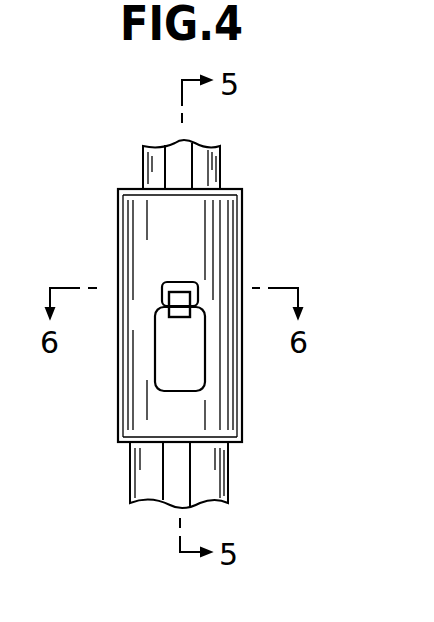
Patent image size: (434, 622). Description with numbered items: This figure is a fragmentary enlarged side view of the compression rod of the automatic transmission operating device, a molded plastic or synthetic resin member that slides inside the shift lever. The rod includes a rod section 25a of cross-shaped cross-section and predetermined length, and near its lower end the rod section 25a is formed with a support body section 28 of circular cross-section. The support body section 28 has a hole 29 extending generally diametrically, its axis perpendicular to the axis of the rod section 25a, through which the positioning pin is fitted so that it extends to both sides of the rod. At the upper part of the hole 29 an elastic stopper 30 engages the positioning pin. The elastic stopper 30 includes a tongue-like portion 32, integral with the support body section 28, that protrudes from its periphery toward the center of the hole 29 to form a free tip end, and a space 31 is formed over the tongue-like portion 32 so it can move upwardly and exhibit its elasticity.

The rod section 25a is at (213, 157).
The support body section 28 is at (242, 250).
The hole 29 is at (193, 378).
The elastic stopper 30 is at (172, 322).
The space 31 is at (170, 283).
The tongue-like portion 32 is at (190, 295).